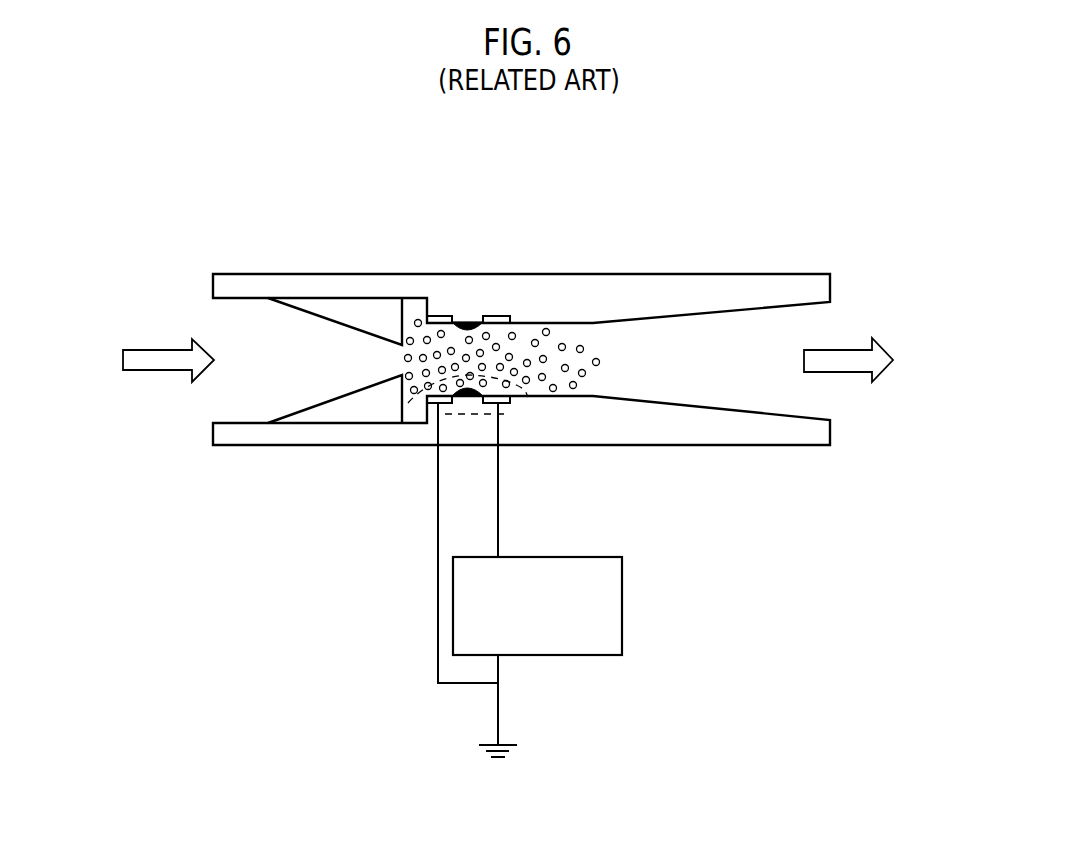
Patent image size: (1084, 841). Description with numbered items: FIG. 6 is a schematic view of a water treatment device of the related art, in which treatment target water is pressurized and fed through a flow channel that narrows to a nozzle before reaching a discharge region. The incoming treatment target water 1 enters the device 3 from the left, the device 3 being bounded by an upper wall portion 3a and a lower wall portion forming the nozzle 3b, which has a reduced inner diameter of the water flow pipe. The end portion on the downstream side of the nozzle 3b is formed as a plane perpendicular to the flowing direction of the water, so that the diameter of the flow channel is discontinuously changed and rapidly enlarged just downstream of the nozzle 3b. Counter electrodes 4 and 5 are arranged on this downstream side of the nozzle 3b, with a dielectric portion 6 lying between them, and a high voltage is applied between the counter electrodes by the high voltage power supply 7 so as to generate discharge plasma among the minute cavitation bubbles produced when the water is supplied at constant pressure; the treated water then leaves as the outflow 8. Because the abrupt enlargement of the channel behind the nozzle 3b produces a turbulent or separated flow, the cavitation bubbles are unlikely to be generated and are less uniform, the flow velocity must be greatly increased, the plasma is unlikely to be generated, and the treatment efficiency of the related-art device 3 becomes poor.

The inlet gas flow 1 is at (158, 348).
The plasma reactor body 3 is at (521, 301).
The upper wall 3a is at (722, 282).
The nozzle 3b is at (332, 412).
The electrode 4 is at (504, 402).
The electrode 5 is at (422, 403).
The dielectric / discharge region 6 is at (523, 402).
The high voltage power supply (high frequency) 7 is at (623, 611).
The outlet gas flow 8 is at (842, 372).